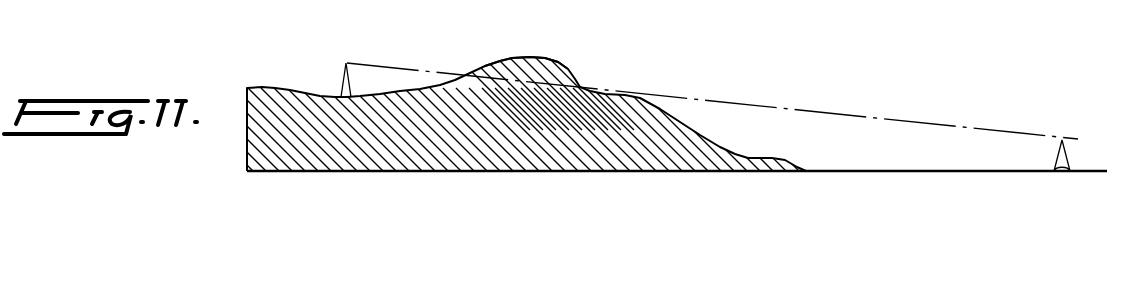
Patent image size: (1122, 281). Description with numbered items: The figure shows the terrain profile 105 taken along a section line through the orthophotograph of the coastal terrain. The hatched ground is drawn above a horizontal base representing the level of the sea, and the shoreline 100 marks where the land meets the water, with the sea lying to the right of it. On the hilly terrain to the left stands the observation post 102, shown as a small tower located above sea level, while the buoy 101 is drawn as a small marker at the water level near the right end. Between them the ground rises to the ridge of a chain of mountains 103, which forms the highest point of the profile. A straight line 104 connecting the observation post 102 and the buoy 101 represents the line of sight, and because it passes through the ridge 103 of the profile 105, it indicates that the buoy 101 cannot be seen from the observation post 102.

The shoreline 100 is at (808, 169).
The buoy 101 is at (1056, 157).
The observation post 102 is at (347, 62).
The ridge of a chain of mountains 103 is at (537, 58).
The straight line of sight 104 is at (857, 99).
The terrain profile 105 is at (485, 157).